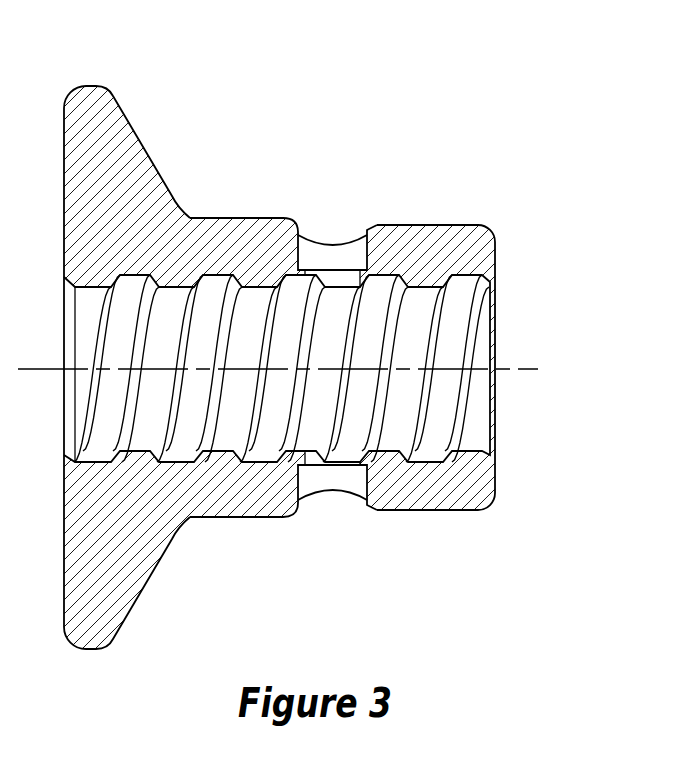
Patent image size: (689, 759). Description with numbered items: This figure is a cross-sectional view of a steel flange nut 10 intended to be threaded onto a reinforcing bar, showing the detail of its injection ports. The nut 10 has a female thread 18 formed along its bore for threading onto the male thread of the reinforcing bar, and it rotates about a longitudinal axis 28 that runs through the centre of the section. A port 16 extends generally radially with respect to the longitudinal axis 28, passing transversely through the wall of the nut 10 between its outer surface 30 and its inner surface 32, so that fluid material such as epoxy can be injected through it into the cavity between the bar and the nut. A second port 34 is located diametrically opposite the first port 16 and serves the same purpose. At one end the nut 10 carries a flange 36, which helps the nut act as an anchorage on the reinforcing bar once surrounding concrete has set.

The nut 10 is at (412, 108).
The port 16 is at (336, 262).
The female thread 18 is at (386, 451).
The longitudinal axis 28 is at (517, 369).
The outer surface 30 is at (428, 225).
The inner surface 32 is at (432, 286).
The second port 34 is at (338, 477).
The flange 36 is at (149, 157).